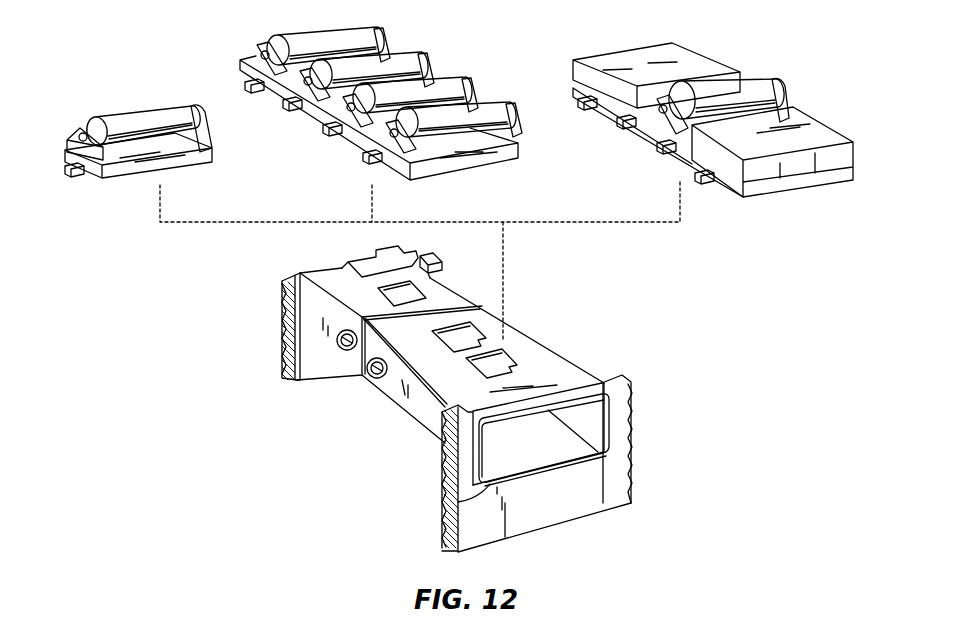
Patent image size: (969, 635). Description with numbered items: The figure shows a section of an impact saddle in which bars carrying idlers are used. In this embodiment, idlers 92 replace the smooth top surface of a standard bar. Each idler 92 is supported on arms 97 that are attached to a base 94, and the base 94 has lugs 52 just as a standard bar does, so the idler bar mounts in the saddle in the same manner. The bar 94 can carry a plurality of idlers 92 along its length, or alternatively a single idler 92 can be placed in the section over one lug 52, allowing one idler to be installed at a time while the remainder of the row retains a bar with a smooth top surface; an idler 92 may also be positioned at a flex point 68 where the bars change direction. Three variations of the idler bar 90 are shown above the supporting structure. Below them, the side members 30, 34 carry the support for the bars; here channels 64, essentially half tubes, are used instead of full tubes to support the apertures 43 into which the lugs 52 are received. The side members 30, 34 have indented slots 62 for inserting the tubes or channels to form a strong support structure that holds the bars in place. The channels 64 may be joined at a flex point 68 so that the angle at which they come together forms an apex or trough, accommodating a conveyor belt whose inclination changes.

The idler 92 is at (105, 117).
The arm 97 is at (209, 124).
The lug 52 is at (85, 176).
The roller module assembly 90 is at (284, 138).
The bar 94 is at (487, 165).
The flex point 68 is at (467, 299).
The aperture 43 is at (512, 356).
The channel 64 is at (338, 352).
The indented slot 62 is at (458, 501).
The side member 30 is at (457, 410).
The side member 34 is at (578, 509).